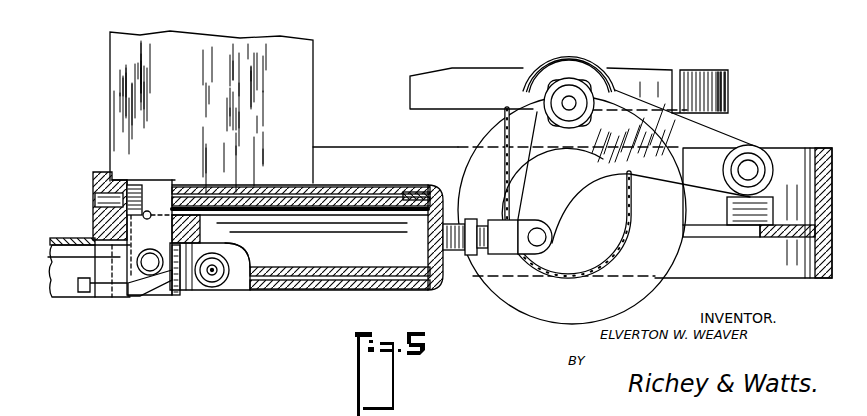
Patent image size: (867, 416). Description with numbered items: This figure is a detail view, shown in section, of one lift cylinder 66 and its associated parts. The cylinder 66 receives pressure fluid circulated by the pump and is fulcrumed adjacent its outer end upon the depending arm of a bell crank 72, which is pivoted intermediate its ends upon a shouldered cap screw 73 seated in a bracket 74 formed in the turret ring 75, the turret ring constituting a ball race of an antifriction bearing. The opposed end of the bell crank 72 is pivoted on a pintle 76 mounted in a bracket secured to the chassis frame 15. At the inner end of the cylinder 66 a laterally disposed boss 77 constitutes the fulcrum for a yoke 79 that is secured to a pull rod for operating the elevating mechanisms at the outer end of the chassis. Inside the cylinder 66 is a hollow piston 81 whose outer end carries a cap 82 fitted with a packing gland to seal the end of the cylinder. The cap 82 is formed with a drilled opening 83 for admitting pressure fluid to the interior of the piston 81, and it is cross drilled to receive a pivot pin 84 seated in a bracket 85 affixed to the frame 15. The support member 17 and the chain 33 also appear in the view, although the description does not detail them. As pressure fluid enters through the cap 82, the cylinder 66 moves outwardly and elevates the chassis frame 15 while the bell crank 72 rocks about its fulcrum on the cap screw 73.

The chassis frame 15 is at (685, 263).
The support member 17 is at (304, 86).
The chain 33 is at (503, 148).
The lift cylinder 66 is at (276, 292).
The bell crank 72 is at (560, 197).
The shouldered cap screw 73 is at (571, 101).
The bracket 74 is at (558, 66).
The turret ring 75 is at (478, 82).
The pintle 76 is at (749, 170).
The boss 77 is at (215, 290).
The yoke 79 is at (86, 294).
The hollow piston 81 is at (385, 254).
The cap 82 is at (146, 186).
The drilled opening 83 is at (156, 212).
The pivot pin 84 is at (151, 278).
The bracket 85 is at (167, 285).